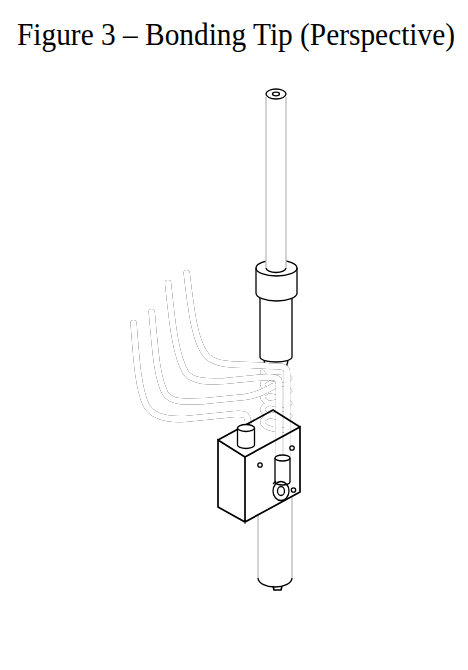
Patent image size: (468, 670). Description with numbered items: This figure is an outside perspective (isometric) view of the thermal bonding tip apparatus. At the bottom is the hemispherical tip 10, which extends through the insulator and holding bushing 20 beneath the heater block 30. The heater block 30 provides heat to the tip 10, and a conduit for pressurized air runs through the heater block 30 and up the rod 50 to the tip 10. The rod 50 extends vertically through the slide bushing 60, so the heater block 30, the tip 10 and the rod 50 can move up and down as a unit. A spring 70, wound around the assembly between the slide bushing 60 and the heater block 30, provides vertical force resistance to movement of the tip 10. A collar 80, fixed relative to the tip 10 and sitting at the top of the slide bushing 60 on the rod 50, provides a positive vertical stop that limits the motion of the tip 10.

The hemispherical tip 10 is at (277, 590).
The insulator and holding bushing 20 is at (290, 542).
The heater block 30 is at (302, 458).
The rod 50 is at (285, 161).
The slide bushing 60 is at (290, 332).
The spring 70 is at (290, 384).
The collar 80 is at (292, 284).